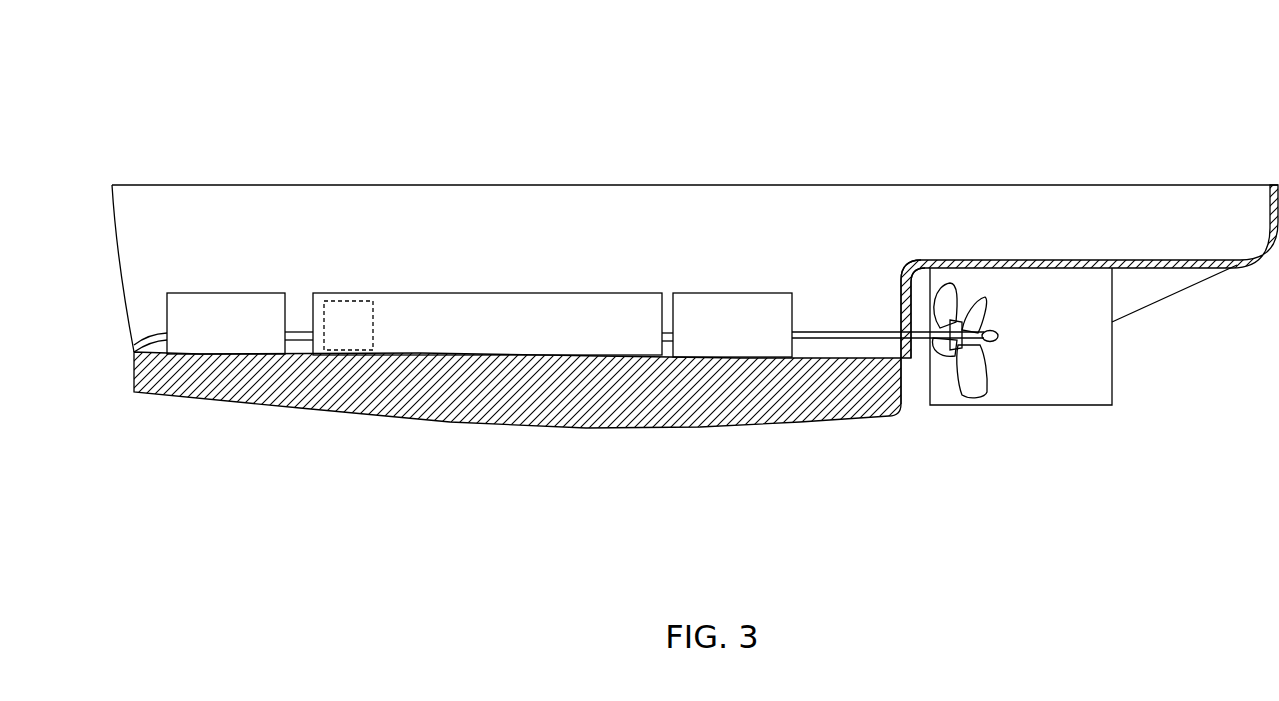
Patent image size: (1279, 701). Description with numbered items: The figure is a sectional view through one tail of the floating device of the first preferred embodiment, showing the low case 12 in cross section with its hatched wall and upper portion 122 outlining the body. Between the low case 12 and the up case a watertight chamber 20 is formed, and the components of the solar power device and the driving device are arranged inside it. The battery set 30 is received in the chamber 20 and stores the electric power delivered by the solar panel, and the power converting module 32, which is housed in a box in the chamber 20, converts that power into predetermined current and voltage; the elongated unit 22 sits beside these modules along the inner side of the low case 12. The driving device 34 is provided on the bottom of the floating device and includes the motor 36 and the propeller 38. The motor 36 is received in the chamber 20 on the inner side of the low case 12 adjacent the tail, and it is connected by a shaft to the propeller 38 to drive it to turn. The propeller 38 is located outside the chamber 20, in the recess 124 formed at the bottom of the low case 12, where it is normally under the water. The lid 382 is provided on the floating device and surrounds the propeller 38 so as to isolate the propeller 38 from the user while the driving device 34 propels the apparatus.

The low case 12 is at (586, 435).
The upper hull portion 122 is at (1162, 185).
The recess 124 is at (917, 387).
The chamber 20 is at (632, 217).
The battery module 22 is at (517, 293).
The battery set 30 is at (215, 293).
The power converting module 32 is at (344, 317).
The driving device 34 is at (835, 234).
The motor 36 is at (768, 317).
The propeller 38 is at (948, 312).
The lid 382 is at (1087, 386).